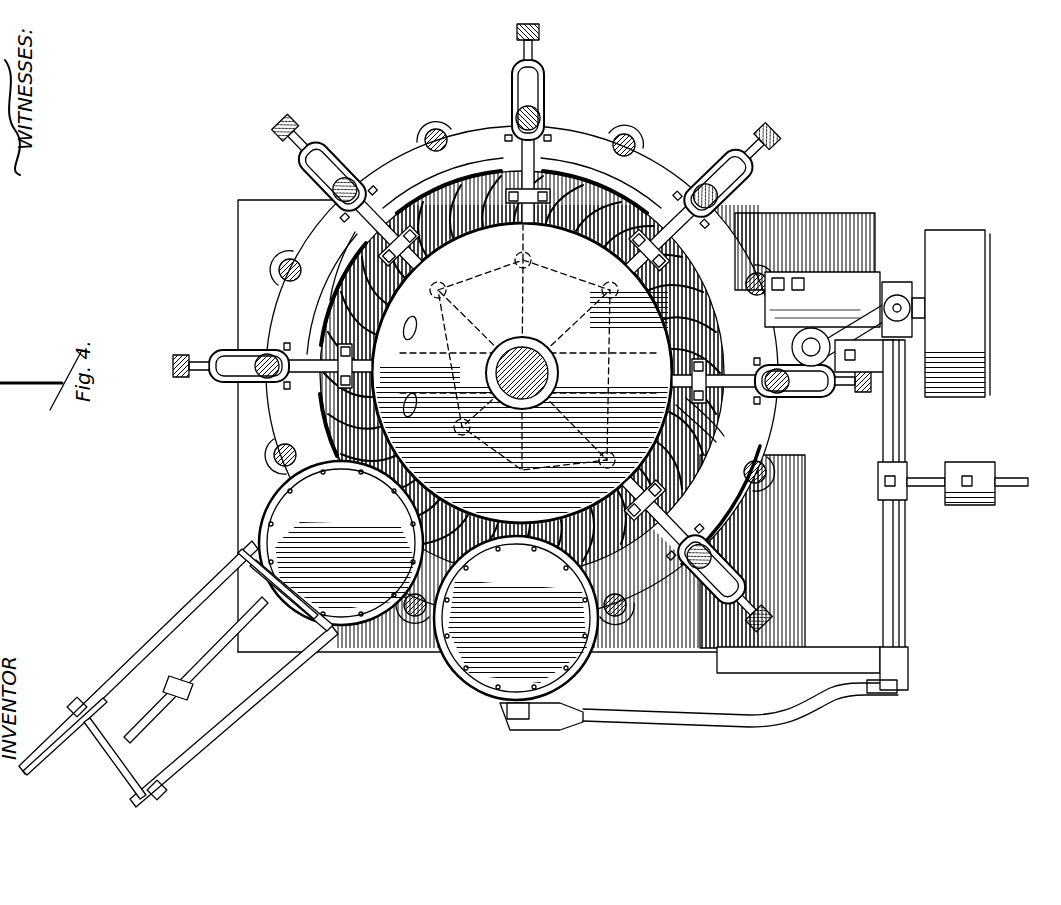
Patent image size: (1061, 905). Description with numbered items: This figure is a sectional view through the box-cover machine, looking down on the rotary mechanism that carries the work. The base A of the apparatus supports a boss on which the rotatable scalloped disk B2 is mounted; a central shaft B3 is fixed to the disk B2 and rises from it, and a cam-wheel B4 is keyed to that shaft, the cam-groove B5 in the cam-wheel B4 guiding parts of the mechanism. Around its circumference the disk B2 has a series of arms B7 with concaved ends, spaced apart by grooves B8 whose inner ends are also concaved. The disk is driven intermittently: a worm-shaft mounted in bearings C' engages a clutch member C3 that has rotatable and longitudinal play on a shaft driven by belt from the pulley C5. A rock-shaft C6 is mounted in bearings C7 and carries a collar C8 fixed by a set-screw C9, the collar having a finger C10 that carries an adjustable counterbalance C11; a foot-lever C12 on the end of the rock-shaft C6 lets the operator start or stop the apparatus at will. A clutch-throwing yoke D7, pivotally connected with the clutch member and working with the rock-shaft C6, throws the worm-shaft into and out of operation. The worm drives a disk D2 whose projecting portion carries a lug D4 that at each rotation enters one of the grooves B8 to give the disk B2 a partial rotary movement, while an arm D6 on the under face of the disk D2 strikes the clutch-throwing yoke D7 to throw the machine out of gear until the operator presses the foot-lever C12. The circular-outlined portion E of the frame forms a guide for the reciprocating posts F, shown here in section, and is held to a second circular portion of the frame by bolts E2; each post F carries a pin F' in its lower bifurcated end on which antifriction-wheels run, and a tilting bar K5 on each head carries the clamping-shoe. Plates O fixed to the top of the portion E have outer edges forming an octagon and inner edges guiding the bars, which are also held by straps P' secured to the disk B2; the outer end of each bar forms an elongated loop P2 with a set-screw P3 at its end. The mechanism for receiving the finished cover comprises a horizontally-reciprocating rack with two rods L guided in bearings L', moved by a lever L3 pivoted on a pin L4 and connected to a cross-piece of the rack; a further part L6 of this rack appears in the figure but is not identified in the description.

The base A is at (250, 485).
The rotatable scalloped disk B2 is at (345, 262).
The central shaft B3 is at (518, 350).
The cam-wheel B4 is at (522, 373).
The cam-groove B5 is at (655, 345).
The arms B7 is at (345, 300).
The grooves B8 is at (590, 215).
The bearings C' is at (570, 387).
The clutch member C3 is at (862, 278).
The pulley C5 is at (975, 268).
The rock-shaft C6 is at (898, 548).
The bearings C7 is at (908, 662).
The collar C8 is at (905, 462).
The set-screw C9 is at (885, 480).
The finger C10 is at (1012, 486).
The adjustable counterbalance C11 is at (975, 505).
The foot-lever C12 is at (614, 712).
The disk D2 is at (790, 350).
The lug D4 is at (800, 345).
The arm D6 is at (925, 320).
The clutch-throwing yoke D7 is at (905, 305).
The circular-outlined portion of the frame E is at (676, 175).
The bolts E2 is at (278, 272).
The reciprocating posts F is at (558, 331).
The pin F' is at (235, 383).
The tilting bar K5 is at (545, 35).
The rods L is at (178, 674).
The bearings L' is at (208, 674).
The lever L3 is at (145, 742).
The pin L4 is at (175, 680).
The drum L6 is at (214, 660).
The plates O is at (440, 330).
The straps P' is at (484, 253).
The elongated loop P2 is at (330, 160).
The set-screw P3 is at (302, 130).